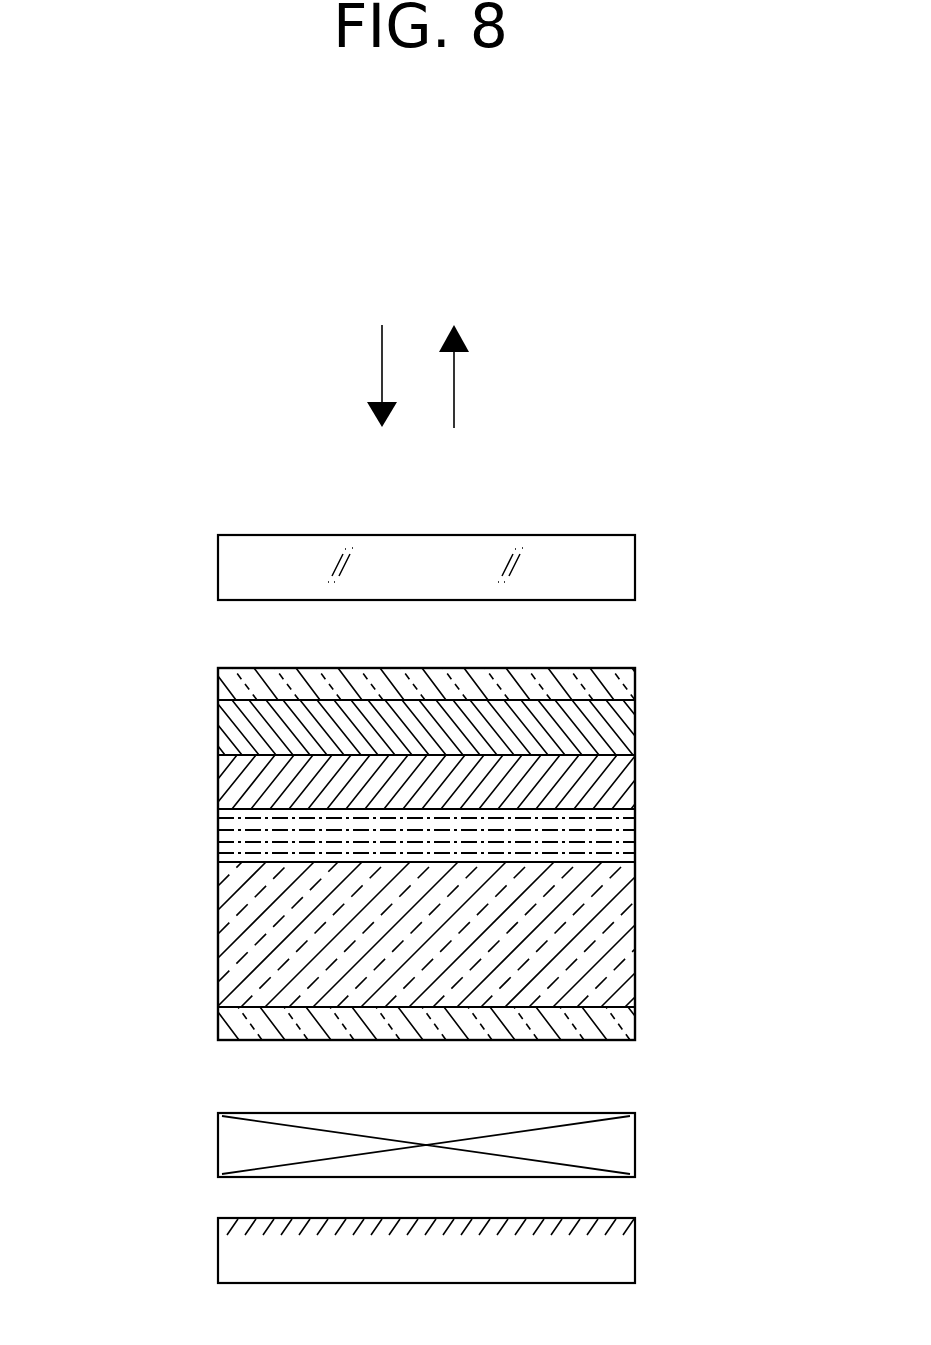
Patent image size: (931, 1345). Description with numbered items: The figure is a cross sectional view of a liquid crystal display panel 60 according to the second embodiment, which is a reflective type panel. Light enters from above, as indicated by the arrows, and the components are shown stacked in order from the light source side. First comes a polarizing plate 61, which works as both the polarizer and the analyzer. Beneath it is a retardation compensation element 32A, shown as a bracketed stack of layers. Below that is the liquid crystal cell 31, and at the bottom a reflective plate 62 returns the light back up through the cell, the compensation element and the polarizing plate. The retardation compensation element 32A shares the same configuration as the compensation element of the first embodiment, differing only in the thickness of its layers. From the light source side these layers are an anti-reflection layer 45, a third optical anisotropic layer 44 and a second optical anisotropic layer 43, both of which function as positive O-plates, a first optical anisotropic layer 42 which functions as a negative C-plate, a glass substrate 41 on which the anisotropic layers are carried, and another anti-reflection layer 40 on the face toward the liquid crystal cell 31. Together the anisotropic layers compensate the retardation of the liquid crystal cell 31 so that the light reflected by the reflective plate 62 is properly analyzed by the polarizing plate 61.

The liquid crystal display panel 60 is at (619, 457).
The polarizing plate 61 is at (620, 565).
The reflective plate 62 is at (618, 1255).
The liquid crystal cell 31 is at (618, 1145).
The retardation compensation element 32A is at (173, 673).
The anti-reflection layer 40 is at (622, 1025).
The glass substrate 41 is at (625, 932).
The first optical anisotropic layer 42 is at (627, 837).
The second optical anisotropic layer 43 is at (627, 777).
The third optical anisotropic layer 44 is at (625, 718).
The anti-reflection layer 45 is at (636, 683).